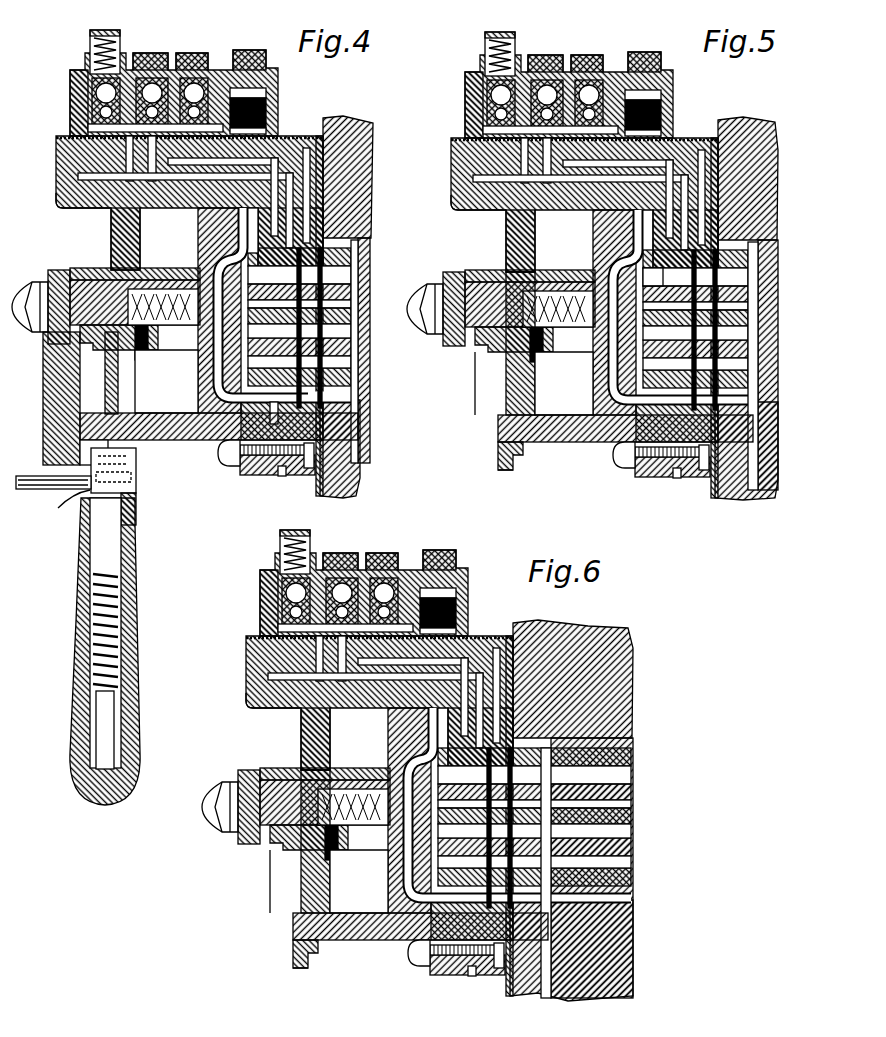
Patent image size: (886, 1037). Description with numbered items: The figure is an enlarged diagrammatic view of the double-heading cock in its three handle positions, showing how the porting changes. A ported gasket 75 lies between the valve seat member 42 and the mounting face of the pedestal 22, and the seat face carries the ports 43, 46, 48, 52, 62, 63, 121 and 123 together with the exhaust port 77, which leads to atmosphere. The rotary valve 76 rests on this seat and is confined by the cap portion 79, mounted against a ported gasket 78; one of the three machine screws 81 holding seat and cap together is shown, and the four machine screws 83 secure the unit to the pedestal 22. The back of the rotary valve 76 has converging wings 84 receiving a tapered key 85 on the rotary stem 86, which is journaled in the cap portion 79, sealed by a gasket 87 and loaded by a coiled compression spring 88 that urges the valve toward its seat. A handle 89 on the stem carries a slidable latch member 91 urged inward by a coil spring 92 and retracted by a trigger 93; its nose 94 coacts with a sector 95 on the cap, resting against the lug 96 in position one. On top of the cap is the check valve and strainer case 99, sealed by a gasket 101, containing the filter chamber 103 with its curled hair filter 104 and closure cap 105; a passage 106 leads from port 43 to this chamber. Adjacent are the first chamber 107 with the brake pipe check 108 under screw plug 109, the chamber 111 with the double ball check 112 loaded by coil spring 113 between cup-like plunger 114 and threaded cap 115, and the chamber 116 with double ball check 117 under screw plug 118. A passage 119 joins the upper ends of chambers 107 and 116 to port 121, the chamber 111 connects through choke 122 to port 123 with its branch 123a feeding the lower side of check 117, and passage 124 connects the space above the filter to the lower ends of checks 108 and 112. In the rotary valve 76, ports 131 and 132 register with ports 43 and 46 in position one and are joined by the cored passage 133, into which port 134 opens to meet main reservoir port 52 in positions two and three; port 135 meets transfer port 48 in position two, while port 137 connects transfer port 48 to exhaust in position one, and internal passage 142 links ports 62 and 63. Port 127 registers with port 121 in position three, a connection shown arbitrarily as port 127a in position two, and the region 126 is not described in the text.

In FIG. 4, the pedestal 22 is at (338, 110).
In FIG. 5, the pedestal 22 is at (750, 296).
In FIG. 6, the pedestal 22 is at (571, 809).
In FIG. 4, the valve seat member 42 is at (301, 460).
In FIG. 5, the valve seat member 42 is at (699, 477).
In FIG. 6, the valve seat member 42 is at (490, 975).
In FIG. 4, the port 43 is at (330, 387).
In FIG. 5, the port 43 is at (680, 305).
In FIG. 6, the port 43 is at (534, 808).
In FIG. 4, the port 46 is at (299, 275).
In FIG. 5, the port 46 is at (695, 277).
In FIG. 6, the port 46 is at (549, 775).
In FIG. 4, the transfer valve port 48 is at (350, 355).
In FIG. 5, the transfer valve port 48 is at (709, 363).
In FIG. 6, the transfer valve port 48 is at (549, 848).
In FIG. 4, the main reservoir port 52 is at (345, 283).
In FIG. 6, the main reservoir port 52 is at (549, 798).
In FIG. 4, the port 62 is at (352, 320).
In FIG. 5, the port 62 is at (714, 322).
In FIG. 6, the port 62 is at (549, 827).
In FIG. 4, the port 63 is at (350, 300).
In FIG. 5, the port 63 is at (712, 301).
In FIG. 6, the port 63 is at (559, 813).
In FIG. 4, the ported gasket 75 is at (311, 128).
In FIG. 5, the ported gasket 75 is at (723, 299).
In FIG. 6, the ported gasket 75 is at (520, 801).
In FIG. 4, the rotary valve 76 is at (190, 383).
In FIG. 5, the rotary valve 76 is at (600, 312).
In FIG. 6, the rotary valve 76 is at (390, 810).
In FIG. 4, the exhaust port 77 is at (274, 468).
In FIG. 5, the exhaust port 77 is at (673, 484).
In FIG. 6, the exhaust port 77 is at (465, 983).
In FIG. 4, the ported gasket 78 is at (245, 467).
In FIG. 5, the ported gasket 78 is at (672, 479).
In FIG. 6, the ported gasket 78 is at (467, 983).
In FIG. 4, the cap portion 79 is at (158, 432).
In FIG. 5, the cap portion 79 is at (625, 440).
In FIG. 6, the cap portion 79 is at (420, 939).
In FIG. 4, the machine screw 81 is at (218, 460).
In FIG. 5, the machine screw 81 is at (619, 467).
In FIG. 6, the machine screw 81 is at (417, 966).
In FIG. 4, the machine screw 83 is at (210, 445).
In FIG. 5, the machine screw 83 is at (641, 452).
In FIG. 6, the machine screw 83 is at (439, 964).
In FIG. 4, the converging wings 84 is at (178, 260).
In FIG. 5, the converging wings 84 is at (530, 309).
In FIG. 6, the converging wings 84 is at (325, 812).
In FIG. 4, the tapered key 85 is at (150, 317).
In FIG. 5, the tapered key 85 is at (558, 279).
In FIG. 6, the tapered key 85 is at (353, 777).
In FIG. 4, the rotary stem 86 is at (97, 348).
In FIG. 5, the rotary stem 86 is at (481, 383).
In FIG. 6, the rotary stem 86 is at (275, 881).
In FIG. 4, the gasket 87 is at (72, 378).
In FIG. 5, the gasket 87 is at (499, 343).
In FIG. 6, the gasket 87 is at (292, 841).
In FIG. 4, the coiled compression spring 88 is at (62, 264).
In FIG. 5, the coiled compression spring 88 is at (431, 323).
In FIG. 6, the coiled compression spring 88 is at (220, 817).
In FIG. 4, the handle 89 is at (62, 725).
In FIG. 5, the handle 89 is at (448, 299).
In FIG. 6, the handle 89 is at (247, 790).
In FIG. 4, the latch member 91 is at (70, 500).
In FIG. 4, the coil spring 92 is at (68, 604).
In FIG. 4, the trigger 93 is at (25, 481).
In FIG. 4, the nose 94 is at (128, 452).
In FIG. 4, the sector 95 is at (92, 438).
In FIG. 5, the sector 95 is at (499, 453).
In FIG. 6, the sector 95 is at (293, 941).
In FIG. 4, the lug 96 is at (128, 478).
In FIG. 5, the lug 96 is at (508, 475).
In FIG. 6, the lug 96 is at (288, 960).
In FIG. 4, the check valve and strainer case 99 is at (66, 100).
In FIG. 5, the check valve and strainer case 99 is at (542, 95).
In FIG. 6, the check valve and strainer case 99 is at (354, 593).
In FIG. 4, the gasket 101 is at (62, 131).
In FIG. 5, the gasket 101 is at (567, 134).
In FIG. 6, the gasket 101 is at (363, 639).
In FIG. 4, the filter chamber 103 is at (258, 85).
In FIG. 5, the filter chamber 103 is at (667, 97).
In FIG. 6, the filter chamber 103 is at (453, 569).
In FIG. 4, the curled hair filter 104 is at (258, 104).
In FIG. 5, the curled hair filter 104 is at (667, 115).
In FIG. 6, the curled hair filter 104 is at (460, 604).
In FIG. 4, the closure cap 105 is at (249, 51).
In FIG. 5, the closure cap 105 is at (644, 53).
In FIG. 6, the closure cap 105 is at (441, 547).
In FIG. 4, the passage 106 is at (258, 123).
In FIG. 5, the passage 106 is at (667, 134).
In FIG. 6, the passage 106 is at (459, 623).
In FIG. 4, the first chamber 107 is at (200, 70).
In FIG. 5, the first chamber 107 is at (602, 76).
In FIG. 6, the first chamber 107 is at (397, 581).
In FIG. 4, the brake pipe check 108 is at (186, 74).
In FIG. 5, the brake pipe check 108 is at (585, 71).
In FIG. 6, the brake pipe check 108 is at (381, 561).
In FIG. 4, the screw plug 109 is at (185, 45).
In FIG. 5, the screw plug 109 is at (588, 55).
In FIG. 6, the screw plug 109 is at (388, 546).
In FIG. 4, the chamber 111 is at (62, 68).
In FIG. 5, the chamber 111 is at (455, 103).
In FIG. 6, the chamber 111 is at (251, 603).
In FIG. 4, the double ball check 112 is at (62, 86).
In FIG. 5, the double ball check 112 is at (473, 102).
In FIG. 6, the double ball check 112 is at (276, 585).
In FIG. 4, the coil spring 113 is at (82, 28).
In FIG. 5, the coil spring 113 is at (478, 51).
In FIG. 6, the coil spring 113 is at (274, 545).
In FIG. 4, the cup-like plunger 114 is at (82, 40).
In FIG. 5, the cup-like plunger 114 is at (478, 56).
In FIG. 6, the cup-like plunger 114 is at (269, 553).
In FIG. 4, the threaded cap 115 is at (135, 45).
In FIG. 5, the threaded cap 115 is at (537, 46).
In FIG. 6, the threaded cap 115 is at (337, 545).
In FIG. 4, the chamber 116 is at (145, 74).
In FIG. 5, the chamber 116 is at (553, 77).
In FIG. 6, the chamber 116 is at (353, 577).
In FIG. 4, the double ball check 117 is at (150, 70).
In FIG. 5, the double ball check 117 is at (548, 74).
In FIG. 6, the double ball check 117 is at (349, 573).
In FIG. 4, the screw plug 118 is at (108, 70).
In FIG. 5, the screw plug 118 is at (513, 81).
In FIG. 6, the screw plug 118 is at (318, 565).
In FIG. 4, the passage 119 is at (70, 168).
In FIG. 5, the passage 119 is at (553, 205).
In FIG. 6, the passage 119 is at (347, 703).
In FIG. 4, the port 121 is at (132, 218).
In FIG. 5, the port 121 is at (502, 241).
In FIG. 6, the port 121 is at (461, 729).
In FIG. 4, the choke 122 is at (118, 150).
In FIG. 5, the choke 122 is at (486, 160).
In FIG. 6, the choke 122 is at (282, 658).
In FIG. 4, the port 123 is at (62, 195).
In FIG. 5, the port 123 is at (571, 205).
In FIG. 6, the port 123 is at (370, 703).
In FIG. 4, the branch passage 123a is at (100, 200).
In FIG. 5, the branch passage 123a is at (472, 210).
In FIG. 6, the branch passage 123a is at (273, 711).
In FIG. 4, the passage 124 is at (80, 119).
In FIG. 5, the passage 124 is at (524, 122).
In FIG. 6, the passage 124 is at (317, 622).
In FIG. 4, the block 126 is at (250, 223).
In FIG. 6, the port 127 is at (435, 739).
In FIG. 5, the port 127a is at (633, 241).
In FIG. 4, the port 131 is at (285, 303).
In FIG. 4, the port 132 is at (245, 244).
In FIG. 4, the cored passage 133 is at (166, 381).
In FIG. 5, the port 134 is at (661, 277).
In FIG. 5, the port 135 is at (564, 383).
In FIG. 4, the port 137 is at (273, 402).
In FIG. 4, the internal passage 142 is at (300, 240).